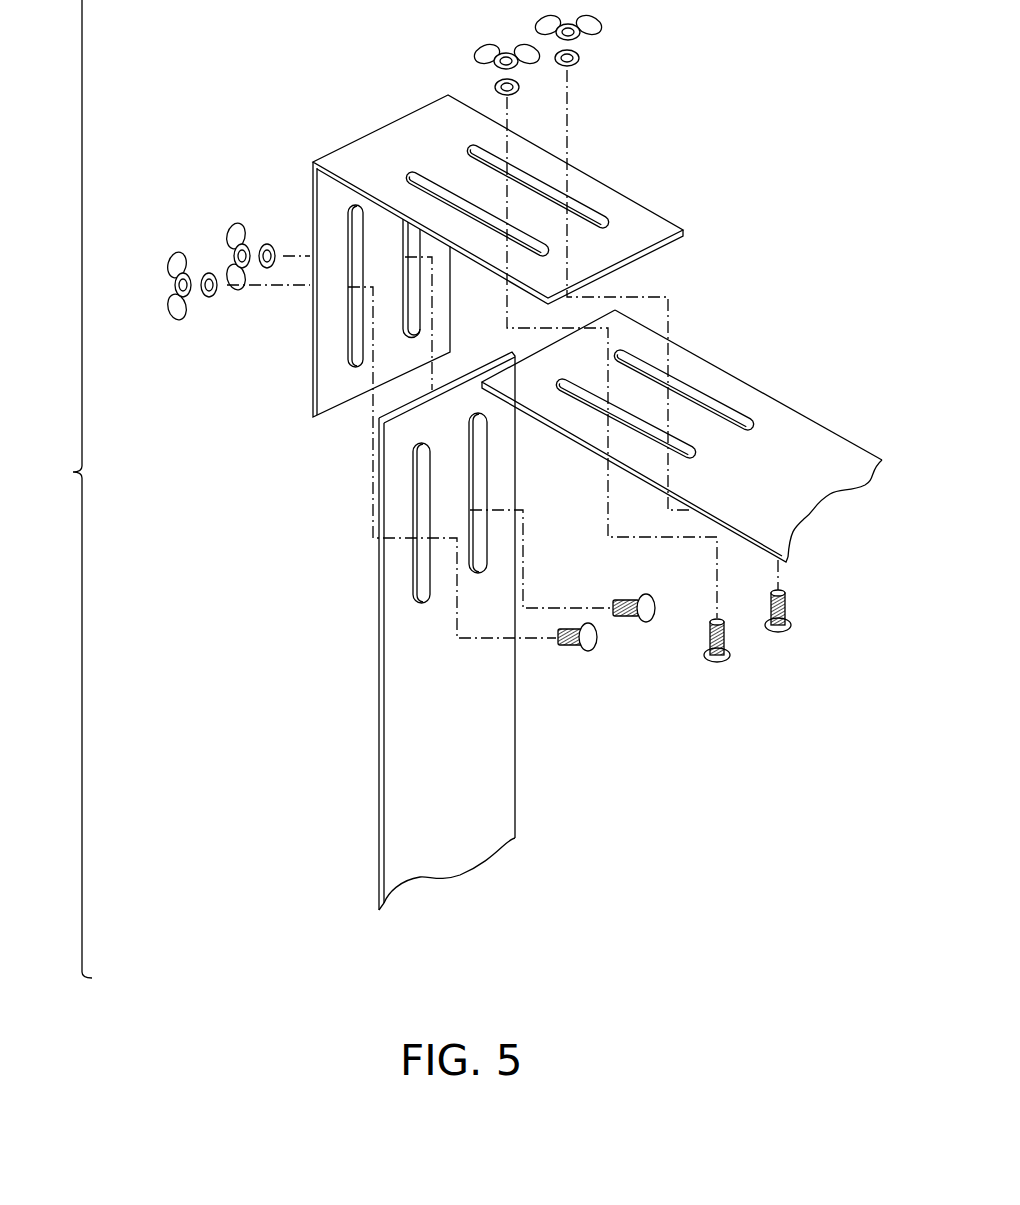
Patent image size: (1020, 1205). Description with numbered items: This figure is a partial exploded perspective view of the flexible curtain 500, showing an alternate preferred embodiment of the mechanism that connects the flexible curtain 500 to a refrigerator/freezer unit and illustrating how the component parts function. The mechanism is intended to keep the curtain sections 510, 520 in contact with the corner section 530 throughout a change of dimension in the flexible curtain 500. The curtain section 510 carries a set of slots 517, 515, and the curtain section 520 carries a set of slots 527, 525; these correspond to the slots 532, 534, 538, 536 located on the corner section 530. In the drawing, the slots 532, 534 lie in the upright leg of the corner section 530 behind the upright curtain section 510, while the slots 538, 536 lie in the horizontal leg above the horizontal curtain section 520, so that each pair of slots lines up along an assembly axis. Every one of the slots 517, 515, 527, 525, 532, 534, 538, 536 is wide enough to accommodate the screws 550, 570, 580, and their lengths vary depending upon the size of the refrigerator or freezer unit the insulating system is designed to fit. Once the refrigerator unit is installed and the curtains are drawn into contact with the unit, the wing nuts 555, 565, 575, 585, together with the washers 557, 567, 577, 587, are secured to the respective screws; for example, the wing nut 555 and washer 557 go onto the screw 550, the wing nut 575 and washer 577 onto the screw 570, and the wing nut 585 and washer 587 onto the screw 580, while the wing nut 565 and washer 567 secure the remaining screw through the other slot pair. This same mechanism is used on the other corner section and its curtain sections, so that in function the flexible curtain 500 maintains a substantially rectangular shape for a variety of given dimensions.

The flexible curtain 500 is at (64, 489).
The curtain section 510 is at (468, 821).
The slot 515 is at (473, 573).
The slot 517 is at (415, 580).
The curtain section 520 is at (813, 497).
The slot 525 is at (738, 410).
The slot 527 is at (698, 453).
The corner section 530 is at (444, 154).
The slot 532 is at (352, 364).
The slot 534 is at (410, 337).
The slot 536 is at (593, 210).
The slot 538 is at (550, 252).
The screw 550 is at (593, 648).
The wing nut 555 is at (168, 260).
The washer 557 is at (207, 278).
The wing nut 565 is at (230, 223).
The washer 567 is at (263, 247).
The screw 570 is at (727, 660).
The wing nut 575 is at (473, 52).
The washer 577 is at (497, 83).
The screw 580 is at (787, 630).
The wing nut 585 is at (603, 23).
The washer 587 is at (578, 58).